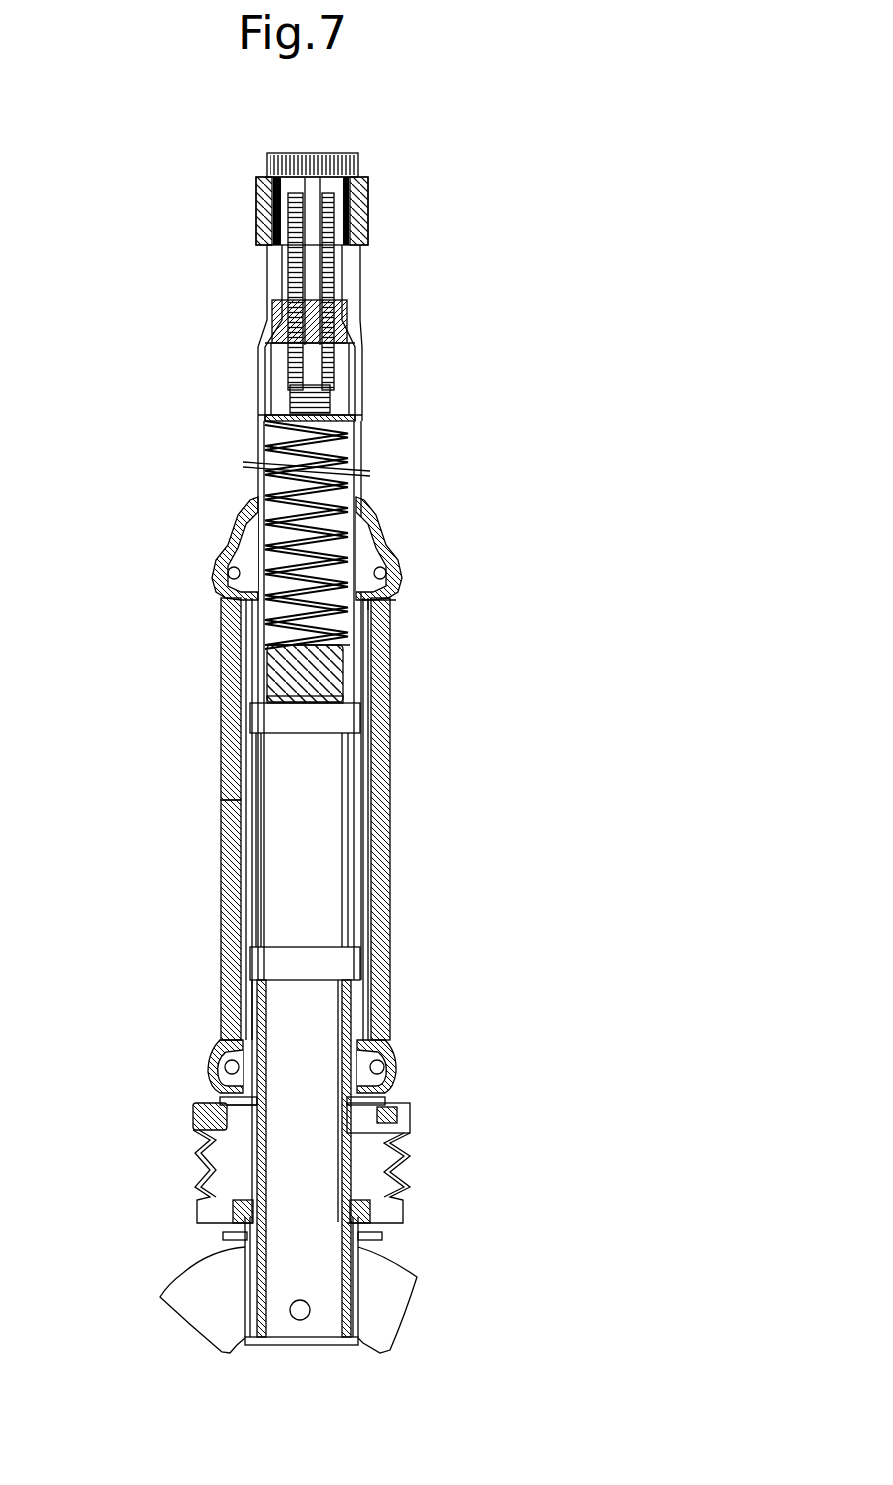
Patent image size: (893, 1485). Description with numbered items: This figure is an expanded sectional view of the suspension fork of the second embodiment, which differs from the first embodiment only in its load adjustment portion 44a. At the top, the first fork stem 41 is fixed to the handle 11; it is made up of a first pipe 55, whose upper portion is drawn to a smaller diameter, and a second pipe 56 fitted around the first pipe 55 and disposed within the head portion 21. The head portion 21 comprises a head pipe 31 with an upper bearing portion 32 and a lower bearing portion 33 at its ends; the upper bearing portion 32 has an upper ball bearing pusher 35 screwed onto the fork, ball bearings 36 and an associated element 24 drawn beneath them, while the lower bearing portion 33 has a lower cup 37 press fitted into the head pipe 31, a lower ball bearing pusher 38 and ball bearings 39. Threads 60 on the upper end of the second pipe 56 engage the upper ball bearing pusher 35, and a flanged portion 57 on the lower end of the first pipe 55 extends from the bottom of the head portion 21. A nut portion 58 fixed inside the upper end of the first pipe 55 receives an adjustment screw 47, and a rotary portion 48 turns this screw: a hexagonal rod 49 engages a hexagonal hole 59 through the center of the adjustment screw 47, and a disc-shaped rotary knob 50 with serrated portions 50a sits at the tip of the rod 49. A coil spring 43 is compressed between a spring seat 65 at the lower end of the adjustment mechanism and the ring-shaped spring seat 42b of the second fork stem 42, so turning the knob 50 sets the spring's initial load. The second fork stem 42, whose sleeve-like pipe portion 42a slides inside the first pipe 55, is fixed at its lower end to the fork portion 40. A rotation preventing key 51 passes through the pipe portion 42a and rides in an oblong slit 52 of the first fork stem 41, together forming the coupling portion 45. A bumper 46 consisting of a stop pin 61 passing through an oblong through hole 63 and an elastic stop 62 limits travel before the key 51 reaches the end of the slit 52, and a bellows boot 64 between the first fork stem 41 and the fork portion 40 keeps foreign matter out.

The rotary knob 50 is at (332, 156).
The serrated portions 50a is at (275, 160).
The rotary portion 48 is at (382, 170).
The handle 11 is at (368, 206).
The hexagonal rod 49 is at (307, 273).
The nut portion 58 is at (335, 320).
The load adjustment portion 44a is at (252, 319).
The first pipe 55 is at (336, 338).
The hexagonal hole 59 is at (331, 365).
The adjustment screw 47 is at (273, 392).
The spring seat 65 is at (340, 408).
The first fork stem 41 is at (372, 432).
The coil spring 43 is at (350, 500).
The threads 60 is at (235, 545).
The upper bearing portion 32 is at (443, 558).
The upper ball bearing pusher 35 is at (377, 537).
The ball bearings 36 is at (382, 573).
The retainer 24 is at (414, 602).
The second pipe 56 is at (372, 665).
The bumper 46 is at (393, 807).
The stop 62 is at (330, 692).
The stop pin 61 is at (343, 718).
The through hole 63 is at (408, 840).
The second fork stem 42 is at (145, 819).
The spring seat 42b is at (222, 655).
The pipe portion 42a is at (225, 860).
The head pipe 31 is at (383, 817).
The head portion 21 is at (402, 838).
The coupling portion 45 is at (380, 856).
The slit 52 is at (263, 853).
The rotation preventing key 51 is at (345, 963).
The lower bearing portion 33 is at (439, 1072).
The lower cup 37 is at (385, 1052).
The ball bearings 39 is at (384, 1068).
The lower ball bearing pusher 38 is at (406, 1109).
The flanged portion 57 is at (245, 1107).
The bellows boot 64 is at (408, 1162).
The fork portion 40 is at (397, 1270).